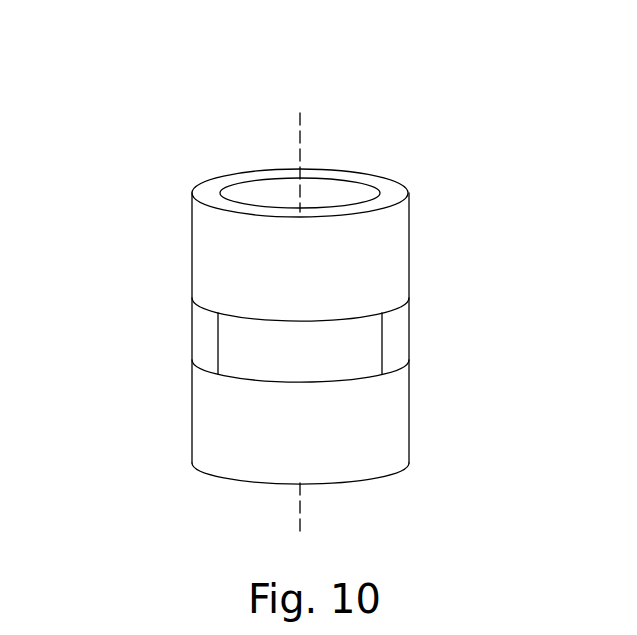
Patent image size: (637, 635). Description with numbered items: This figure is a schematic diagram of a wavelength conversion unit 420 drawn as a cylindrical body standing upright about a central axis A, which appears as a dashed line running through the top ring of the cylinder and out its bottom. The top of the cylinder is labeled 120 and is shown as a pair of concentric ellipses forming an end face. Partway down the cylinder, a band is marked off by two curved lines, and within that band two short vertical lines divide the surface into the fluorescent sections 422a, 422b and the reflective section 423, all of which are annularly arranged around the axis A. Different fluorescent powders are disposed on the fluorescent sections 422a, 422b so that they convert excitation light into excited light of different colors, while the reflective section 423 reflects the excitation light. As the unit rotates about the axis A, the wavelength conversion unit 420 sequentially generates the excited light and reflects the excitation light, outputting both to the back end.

The wavelength conversion unit 420 is at (74, 67).
The top ring / end face of roller 120 is at (210, 188).
The fluorescent section 422a is at (207, 339).
The fluorescent section 422b is at (398, 340).
The reflective section 423 is at (258, 358).
The axis A is at (300, 135).